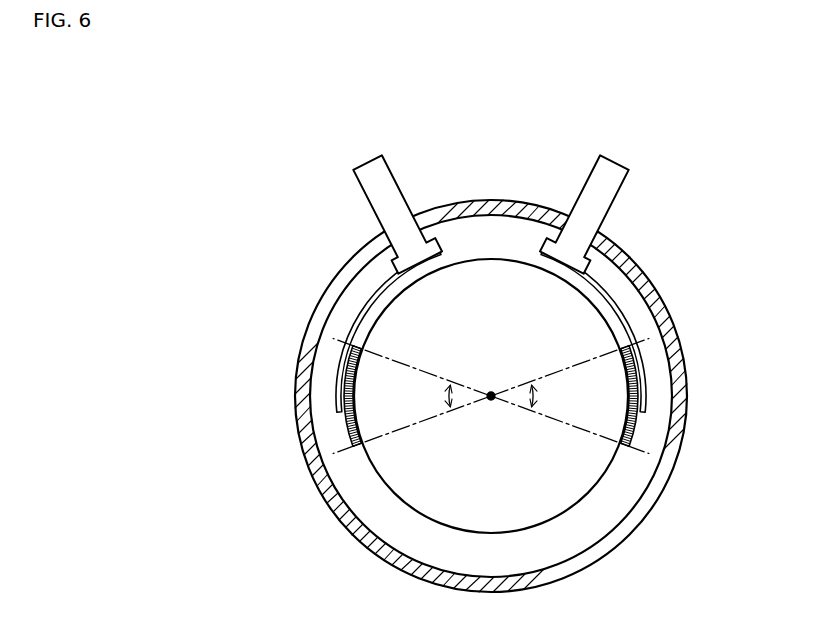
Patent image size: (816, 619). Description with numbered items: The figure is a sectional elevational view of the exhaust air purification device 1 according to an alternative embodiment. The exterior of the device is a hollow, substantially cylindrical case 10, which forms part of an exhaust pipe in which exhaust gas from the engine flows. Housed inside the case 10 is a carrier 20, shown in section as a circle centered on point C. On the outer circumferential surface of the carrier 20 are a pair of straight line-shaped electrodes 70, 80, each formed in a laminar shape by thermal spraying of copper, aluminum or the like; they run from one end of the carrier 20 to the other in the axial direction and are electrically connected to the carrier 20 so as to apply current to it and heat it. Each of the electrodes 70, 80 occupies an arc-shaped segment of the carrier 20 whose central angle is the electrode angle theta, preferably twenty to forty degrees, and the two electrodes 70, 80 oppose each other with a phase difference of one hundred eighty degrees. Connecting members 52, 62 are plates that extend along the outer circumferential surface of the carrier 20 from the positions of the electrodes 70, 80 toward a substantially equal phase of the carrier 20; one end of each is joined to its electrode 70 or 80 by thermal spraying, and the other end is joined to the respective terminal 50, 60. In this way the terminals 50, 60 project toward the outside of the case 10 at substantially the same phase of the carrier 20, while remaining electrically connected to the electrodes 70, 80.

The exhaust air purification device 1 is at (231, 121).
The case 10 is at (348, 535).
The carrier 20 is at (553, 494).
The terminal 50 is at (383, 175).
The connecting member 52 is at (370, 303).
The terminal 60 is at (600, 175).
The connecting member 62 is at (612, 303).
The electrode 70 is at (355, 445).
The electrode 80 is at (627, 445).